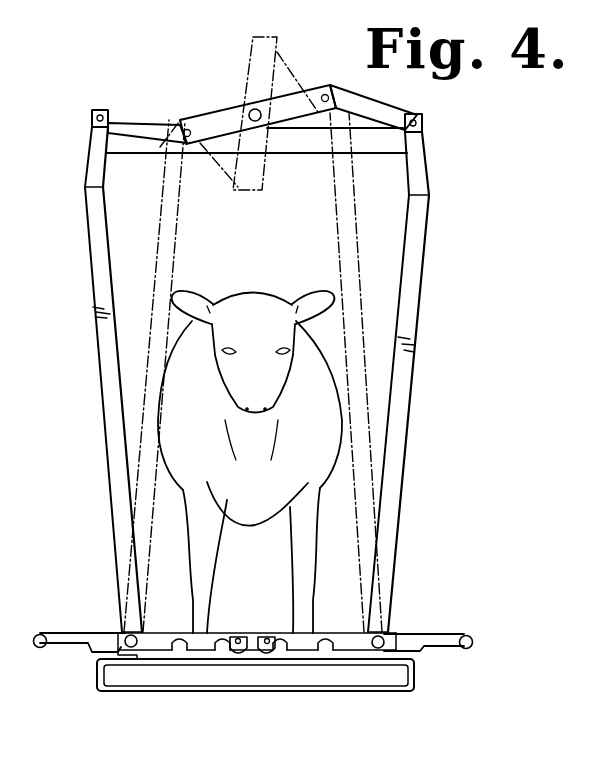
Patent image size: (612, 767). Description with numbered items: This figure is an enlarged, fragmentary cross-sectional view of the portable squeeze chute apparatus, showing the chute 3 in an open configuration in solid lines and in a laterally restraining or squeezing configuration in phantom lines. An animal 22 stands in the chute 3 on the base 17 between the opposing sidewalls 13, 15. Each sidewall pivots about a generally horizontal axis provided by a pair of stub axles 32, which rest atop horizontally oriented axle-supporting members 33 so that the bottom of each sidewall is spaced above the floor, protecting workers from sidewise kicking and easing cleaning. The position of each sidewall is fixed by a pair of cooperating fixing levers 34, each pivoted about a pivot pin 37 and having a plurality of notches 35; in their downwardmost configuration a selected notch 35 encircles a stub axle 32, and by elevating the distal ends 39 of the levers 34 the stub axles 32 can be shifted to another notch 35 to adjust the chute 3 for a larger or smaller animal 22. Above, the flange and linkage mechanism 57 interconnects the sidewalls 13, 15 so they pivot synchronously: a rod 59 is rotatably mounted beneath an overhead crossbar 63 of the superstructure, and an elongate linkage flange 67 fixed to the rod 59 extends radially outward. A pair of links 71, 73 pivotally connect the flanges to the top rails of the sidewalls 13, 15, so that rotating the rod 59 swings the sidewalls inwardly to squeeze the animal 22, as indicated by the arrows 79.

The chute 3 is at (344, 535).
The sidewall 13 is at (100, 452).
The sidewall 15 is at (408, 421).
The base 17 is at (414, 679).
The animal 22 is at (256, 290).
The stub axles 32 is at (139, 636).
The axle-supporting members 33 is at (350, 655).
The fixing levers 34 is at (37, 635).
The notches 35 is at (257, 637).
The pivot pin 37 is at (268, 650).
The distal ends 39 is at (38, 646).
The flange and linkage mechanism 57 is at (146, 66).
The rod 59 is at (250, 113).
The overhead crossbar 63 is at (288, 154).
The linkage flange 67 is at (319, 92).
The link 71 is at (372, 108).
The link 73 is at (117, 119).
The arrows 79 is at (124, 214).